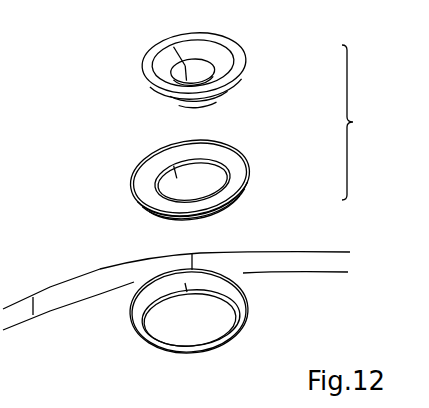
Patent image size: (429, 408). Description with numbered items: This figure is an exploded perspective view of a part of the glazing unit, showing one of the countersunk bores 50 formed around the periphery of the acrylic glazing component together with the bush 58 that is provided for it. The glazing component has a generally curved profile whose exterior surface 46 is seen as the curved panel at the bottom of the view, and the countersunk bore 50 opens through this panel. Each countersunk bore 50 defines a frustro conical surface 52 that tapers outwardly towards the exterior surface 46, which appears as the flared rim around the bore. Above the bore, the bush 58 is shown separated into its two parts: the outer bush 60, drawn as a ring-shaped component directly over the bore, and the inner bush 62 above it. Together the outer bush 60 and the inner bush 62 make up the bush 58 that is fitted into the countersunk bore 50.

The exterior surface 46 is at (70, 357).
The countersunk bore 50 is at (138, 332).
The frustro conical surface 52 is at (238, 286).
The bush 58 is at (365, 122).
The outer bush 60 is at (135, 182).
The inner bush 62 is at (148, 73).